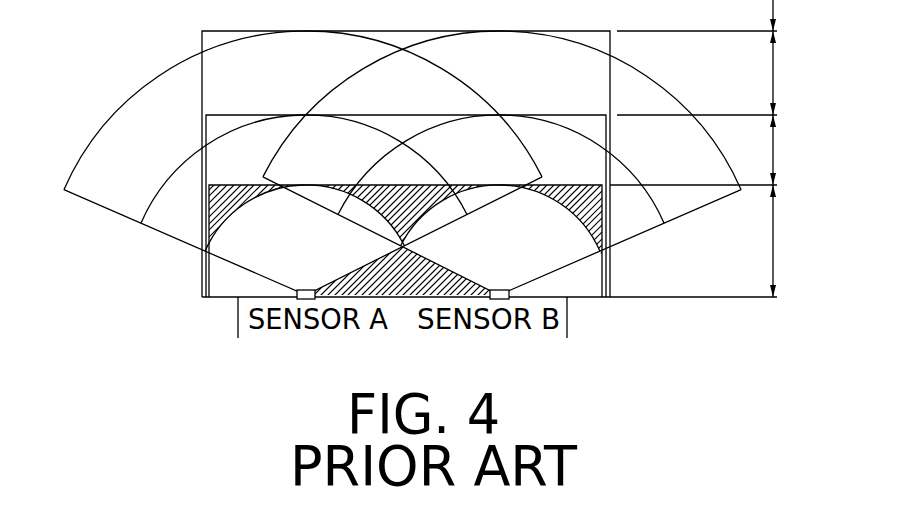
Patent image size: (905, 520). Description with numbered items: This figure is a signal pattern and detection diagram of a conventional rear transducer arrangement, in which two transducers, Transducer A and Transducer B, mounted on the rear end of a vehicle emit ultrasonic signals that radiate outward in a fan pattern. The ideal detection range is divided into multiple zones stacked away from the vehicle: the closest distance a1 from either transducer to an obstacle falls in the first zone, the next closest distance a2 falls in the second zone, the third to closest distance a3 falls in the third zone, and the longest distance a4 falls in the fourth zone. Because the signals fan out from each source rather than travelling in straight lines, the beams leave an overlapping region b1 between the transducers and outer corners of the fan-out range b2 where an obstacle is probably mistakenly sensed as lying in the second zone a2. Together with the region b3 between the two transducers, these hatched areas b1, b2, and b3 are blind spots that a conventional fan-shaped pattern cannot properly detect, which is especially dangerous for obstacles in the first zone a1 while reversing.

The closest distance a1 is at (756, 241).
The next closest distance a2 is at (756, 150).
The third to closest distance a3 is at (697, 74).
The longest distance a4 is at (697, 16).
The overlapping region b1 is at (405, 202).
The outer corner of the fan-out range b2 is at (229, 205).
The blind spot b3 is at (403, 282).